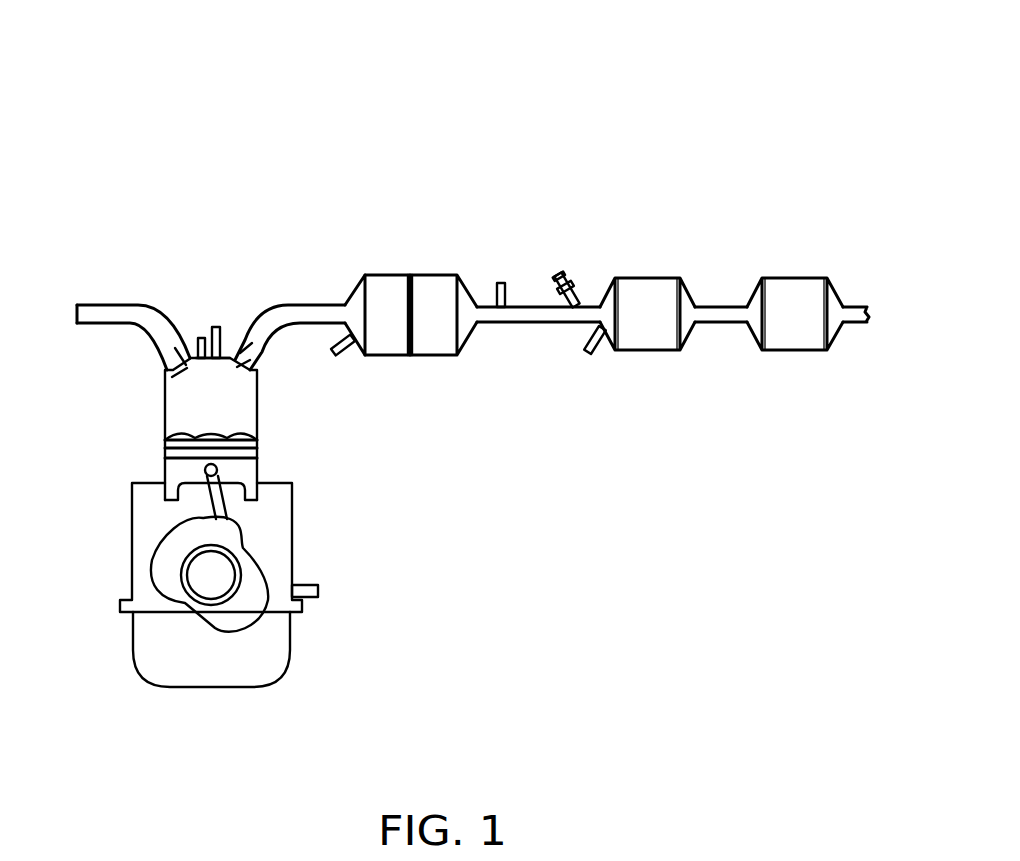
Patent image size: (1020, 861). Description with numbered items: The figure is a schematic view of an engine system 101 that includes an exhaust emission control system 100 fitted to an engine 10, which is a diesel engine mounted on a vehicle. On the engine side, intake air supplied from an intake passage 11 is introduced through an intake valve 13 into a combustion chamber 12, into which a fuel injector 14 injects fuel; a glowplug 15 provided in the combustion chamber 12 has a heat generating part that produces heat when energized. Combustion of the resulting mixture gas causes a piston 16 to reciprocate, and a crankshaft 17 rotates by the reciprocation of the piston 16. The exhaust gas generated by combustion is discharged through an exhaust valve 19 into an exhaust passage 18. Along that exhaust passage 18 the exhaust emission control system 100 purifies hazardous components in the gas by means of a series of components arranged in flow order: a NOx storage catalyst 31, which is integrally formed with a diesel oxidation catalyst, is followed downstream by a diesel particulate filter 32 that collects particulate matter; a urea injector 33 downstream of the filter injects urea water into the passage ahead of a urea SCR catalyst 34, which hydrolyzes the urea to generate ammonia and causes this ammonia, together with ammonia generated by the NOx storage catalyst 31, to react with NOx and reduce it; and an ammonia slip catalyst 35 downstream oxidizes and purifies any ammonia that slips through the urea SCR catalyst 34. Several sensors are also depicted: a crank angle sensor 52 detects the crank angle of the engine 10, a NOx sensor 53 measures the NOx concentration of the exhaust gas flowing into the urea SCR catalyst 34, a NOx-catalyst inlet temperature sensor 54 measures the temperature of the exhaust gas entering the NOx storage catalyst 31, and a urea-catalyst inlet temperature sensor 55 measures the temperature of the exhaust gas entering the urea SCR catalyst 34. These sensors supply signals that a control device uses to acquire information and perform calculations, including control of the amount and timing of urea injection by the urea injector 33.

The engine system 101 is at (170, 50).
The exhaust emission control system 100 is at (633, 215).
The engine 10 is at (312, 524).
The intake passage 11 is at (102, 303).
The combustion chamber 12 is at (175, 412).
The intake valve 13 is at (160, 354).
The fuel injector 14 is at (217, 326).
The glowplug 15 is at (200, 337).
The piston 16 is at (243, 462).
The crankshaft 17 is at (204, 570).
The exhaust passage 18 is at (306, 304).
The exhaust valve 19 is at (252, 356).
The NOx storage catalyst 31 is at (389, 273).
The Diesel Particulate Filter (DPF) 32 is at (430, 274).
The urea injector 33 is at (562, 273).
The urea SCR catalyst 34 is at (647, 293).
The ammonia slip catalyst 35 is at (797, 290).
The crank angle sensor 52 is at (320, 588).
The NOx sensor 53 is at (497, 282).
The NOx-catalyst inlet temperature sensor 54 is at (340, 356).
The urea-catalyst inlet temperature sensor 55 is at (597, 352).